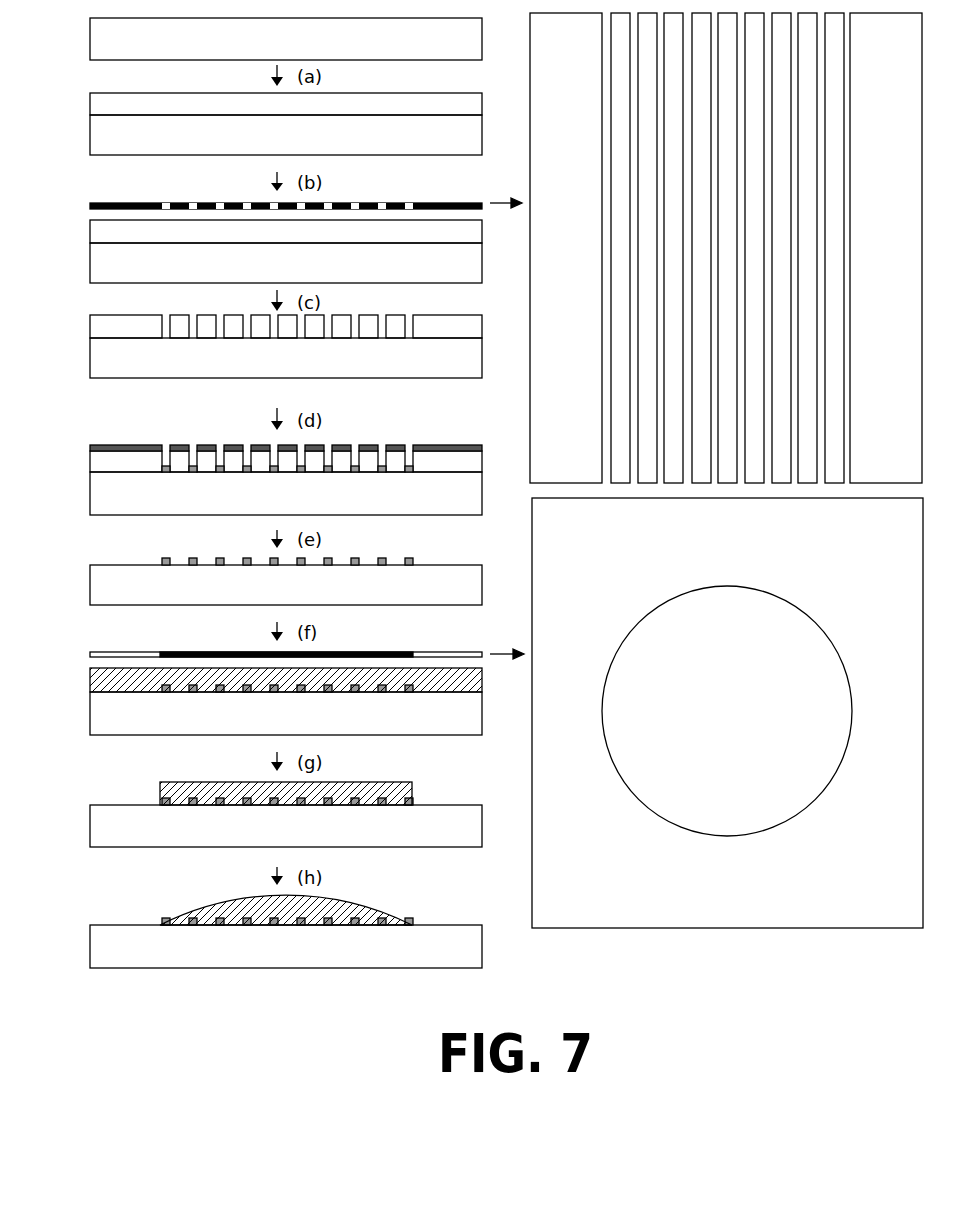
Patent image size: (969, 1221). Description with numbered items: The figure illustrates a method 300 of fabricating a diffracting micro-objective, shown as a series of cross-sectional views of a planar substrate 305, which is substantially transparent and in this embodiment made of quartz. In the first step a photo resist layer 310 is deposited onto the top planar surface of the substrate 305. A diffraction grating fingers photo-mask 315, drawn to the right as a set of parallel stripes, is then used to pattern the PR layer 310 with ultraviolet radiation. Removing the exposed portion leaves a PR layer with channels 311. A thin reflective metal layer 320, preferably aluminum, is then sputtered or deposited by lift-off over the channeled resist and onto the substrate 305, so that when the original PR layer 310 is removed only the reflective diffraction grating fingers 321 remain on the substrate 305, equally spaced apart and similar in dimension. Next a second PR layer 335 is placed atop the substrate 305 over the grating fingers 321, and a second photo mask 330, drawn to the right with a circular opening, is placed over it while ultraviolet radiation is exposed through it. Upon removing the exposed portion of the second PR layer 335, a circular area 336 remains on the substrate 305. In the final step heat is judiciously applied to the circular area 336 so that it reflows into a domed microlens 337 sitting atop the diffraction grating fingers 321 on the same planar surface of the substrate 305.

The method of fabricating a diffracting micro-objective 300 is at (590, 981).
The substrate 305 is at (434, 57).
The photo resist layer 310 is at (90, 104).
The PR layer with channels 311 is at (90, 317).
The diffraction grating fingers photo-mask 315 is at (530, 178).
The metal layer 320 is at (137, 444).
The diffraction grating fingers 321 is at (162, 558).
The second photo mask 330 is at (532, 618).
The second PR layer 335 is at (90, 680).
The circular area 336 is at (168, 783).
The microlens 337 is at (201, 905).